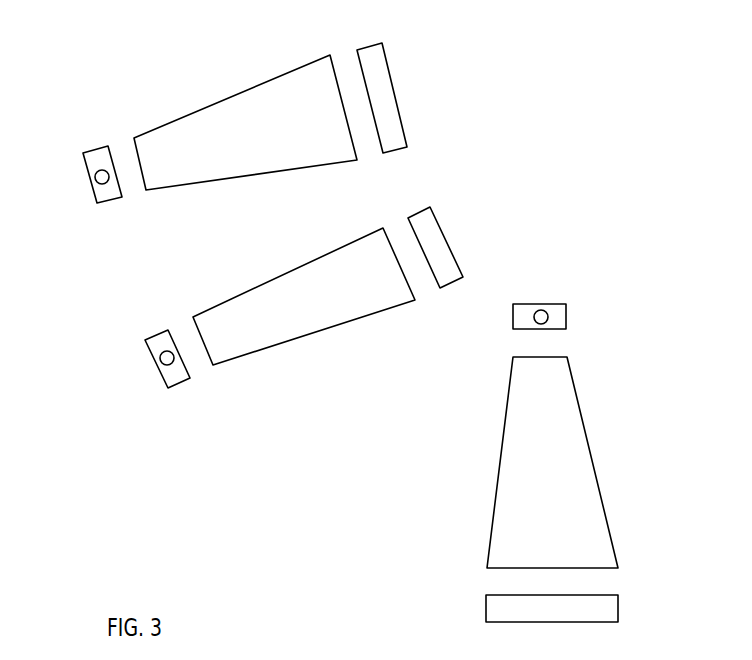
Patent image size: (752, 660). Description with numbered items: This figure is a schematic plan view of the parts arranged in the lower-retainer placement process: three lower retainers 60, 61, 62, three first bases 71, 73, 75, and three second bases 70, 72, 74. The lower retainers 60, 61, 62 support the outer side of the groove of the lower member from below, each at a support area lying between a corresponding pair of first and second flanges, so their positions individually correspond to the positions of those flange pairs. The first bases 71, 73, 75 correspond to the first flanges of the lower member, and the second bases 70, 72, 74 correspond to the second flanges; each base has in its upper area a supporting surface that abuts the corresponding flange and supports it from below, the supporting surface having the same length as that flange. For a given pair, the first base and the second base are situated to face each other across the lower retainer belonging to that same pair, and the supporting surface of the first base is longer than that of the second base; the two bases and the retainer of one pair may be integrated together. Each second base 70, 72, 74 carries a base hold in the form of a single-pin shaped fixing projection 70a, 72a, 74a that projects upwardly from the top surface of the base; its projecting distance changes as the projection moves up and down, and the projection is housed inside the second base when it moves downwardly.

The lower retainer 60 is at (223, 115).
The lower retainer 61 is at (285, 295).
The lower retainer 62 is at (577, 468).
The second base 70 is at (98, 157).
The fixing projection 70a is at (97, 177).
The first base 71 is at (385, 100).
The second base 72 is at (158, 343).
The fixing projection 72a is at (158, 360).
The first base 73 is at (440, 245).
The second base 74 is at (557, 317).
The fixing projection 74a is at (538, 312).
The first base 75 is at (603, 608).